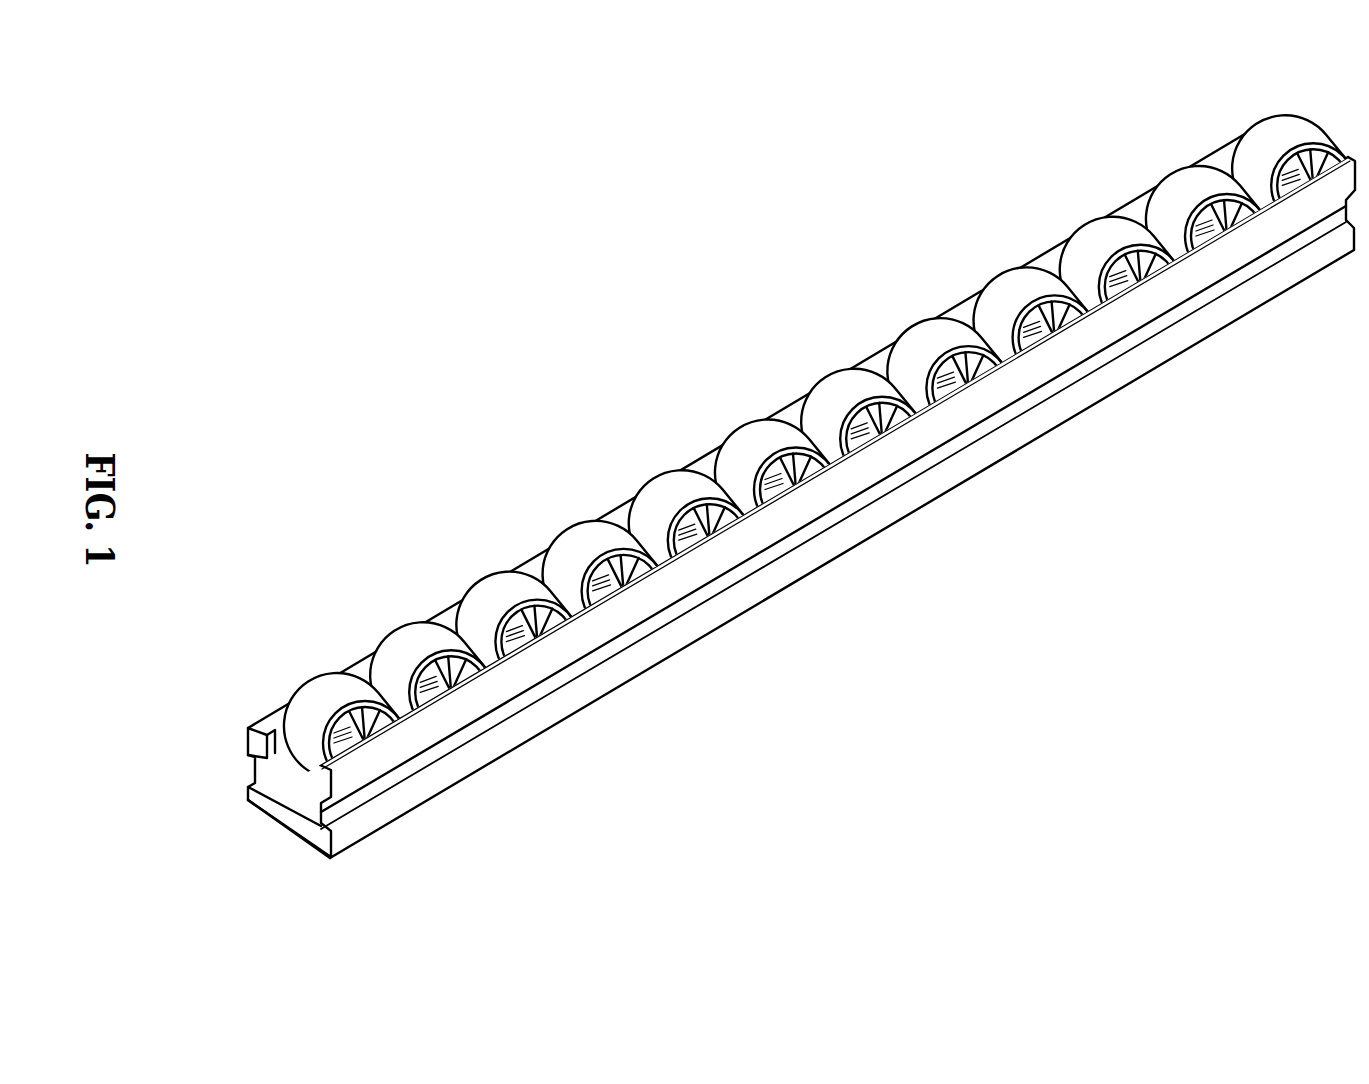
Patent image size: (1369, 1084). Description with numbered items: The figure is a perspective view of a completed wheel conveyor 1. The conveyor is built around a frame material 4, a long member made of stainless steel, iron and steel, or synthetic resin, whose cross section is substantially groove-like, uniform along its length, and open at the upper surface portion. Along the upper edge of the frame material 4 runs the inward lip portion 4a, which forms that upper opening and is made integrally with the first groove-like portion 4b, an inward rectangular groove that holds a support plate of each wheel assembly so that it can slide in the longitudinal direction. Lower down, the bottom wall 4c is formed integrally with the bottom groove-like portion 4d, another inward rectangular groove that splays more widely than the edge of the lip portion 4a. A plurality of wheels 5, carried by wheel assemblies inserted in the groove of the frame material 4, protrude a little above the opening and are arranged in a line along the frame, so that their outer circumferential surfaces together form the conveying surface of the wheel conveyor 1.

The wheel conveyor 1 is at (750, 345).
The frame material 4 is at (720, 538).
The inward lip portion 4a is at (262, 722).
The first groove-like portion 4b is at (247, 757).
The bottom wall 4c is at (305, 858).
The bottom groove-like portion 4d is at (248, 806).
The wheel 5 is at (1272, 142).